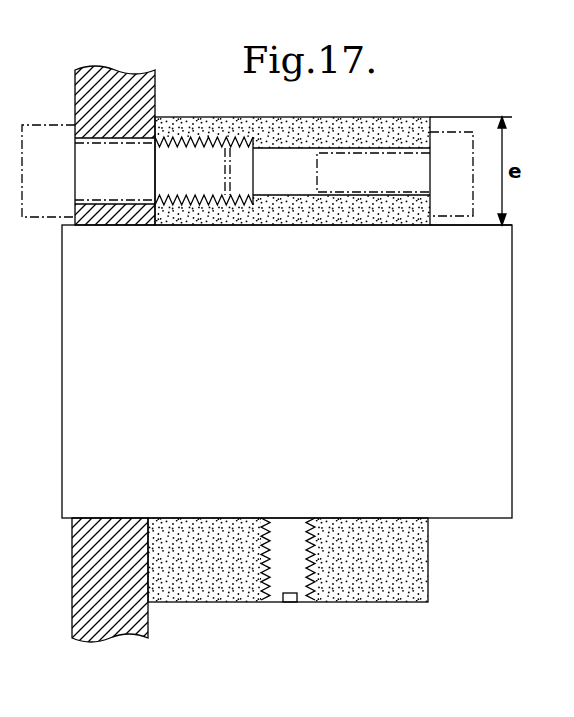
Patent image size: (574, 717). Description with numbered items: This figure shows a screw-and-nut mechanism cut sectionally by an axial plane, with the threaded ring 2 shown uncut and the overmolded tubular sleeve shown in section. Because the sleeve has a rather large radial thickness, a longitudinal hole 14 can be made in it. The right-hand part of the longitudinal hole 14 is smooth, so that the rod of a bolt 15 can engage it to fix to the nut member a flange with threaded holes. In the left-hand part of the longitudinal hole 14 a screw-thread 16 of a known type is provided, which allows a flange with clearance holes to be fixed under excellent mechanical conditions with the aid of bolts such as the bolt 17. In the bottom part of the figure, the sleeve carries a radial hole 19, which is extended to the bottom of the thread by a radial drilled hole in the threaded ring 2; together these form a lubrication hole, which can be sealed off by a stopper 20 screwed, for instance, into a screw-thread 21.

The threaded ring 2 is at (508, 257).
The longitudinal hole 14 is at (278, 147).
The bolt 15 is at (462, 131).
The screw-thread 16 is at (185, 140).
The bolt 17 is at (31, 124).
The radial hole 19 is at (262, 572).
The stopper 20 is at (278, 590).
The screw-thread 21 is at (314, 578).